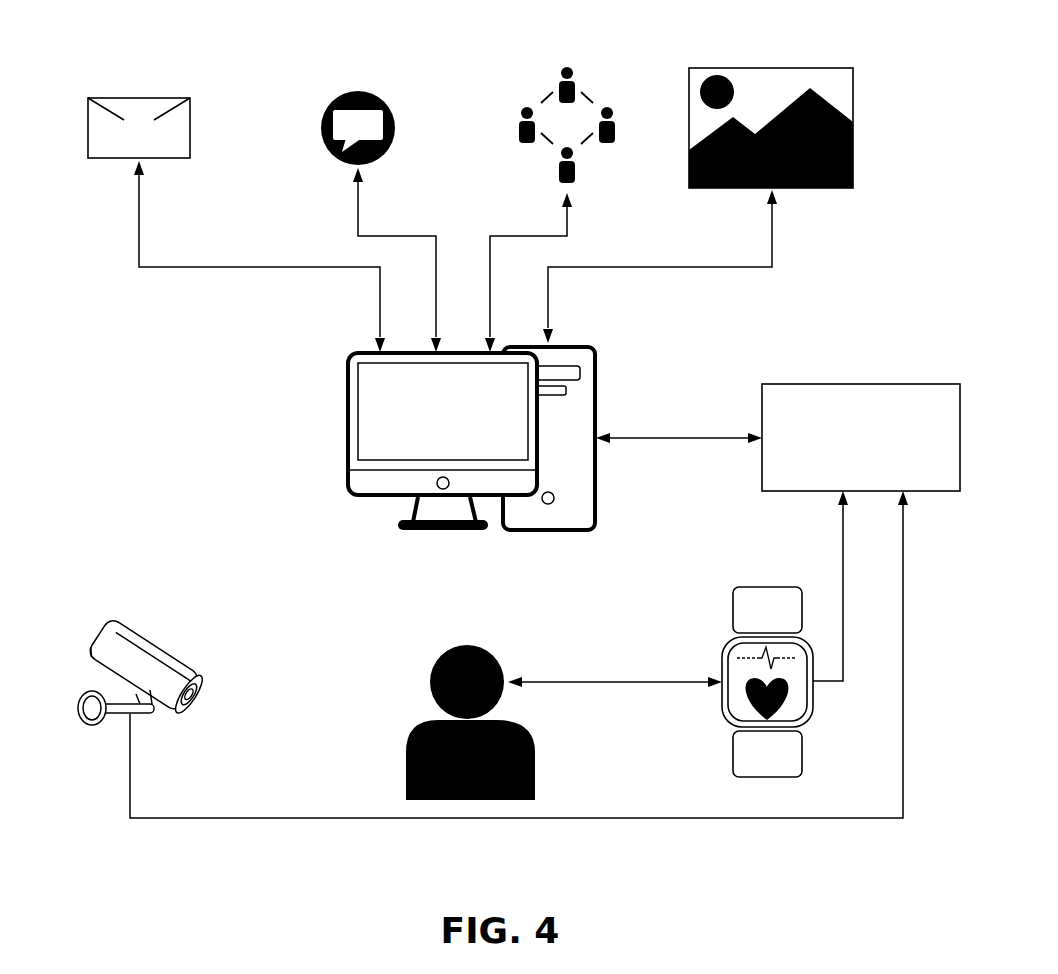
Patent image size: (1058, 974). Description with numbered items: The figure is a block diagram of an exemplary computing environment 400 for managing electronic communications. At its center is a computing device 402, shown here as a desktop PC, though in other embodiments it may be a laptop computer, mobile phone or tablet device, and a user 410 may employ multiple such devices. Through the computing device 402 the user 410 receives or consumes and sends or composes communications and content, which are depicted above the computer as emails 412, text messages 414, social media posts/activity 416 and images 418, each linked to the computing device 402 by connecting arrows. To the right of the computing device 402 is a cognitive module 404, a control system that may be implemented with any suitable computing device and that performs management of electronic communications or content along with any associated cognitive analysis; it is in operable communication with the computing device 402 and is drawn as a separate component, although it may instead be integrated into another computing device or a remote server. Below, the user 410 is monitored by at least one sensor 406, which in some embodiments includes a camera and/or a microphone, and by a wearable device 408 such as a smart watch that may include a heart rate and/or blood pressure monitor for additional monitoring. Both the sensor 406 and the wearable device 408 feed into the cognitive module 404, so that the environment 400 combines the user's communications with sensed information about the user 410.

The computing environment 400 is at (85, 56).
The computing device 402 is at (580, 346).
The cognitive module 404 is at (934, 383).
The sensor 406 is at (174, 652).
The wearable device 408 is at (776, 586).
The user 410 is at (478, 645).
The emails 412 is at (164, 97).
The text messages 414 is at (368, 92).
The social media posts/activity 416 is at (572, 66).
The images 418 is at (829, 67).